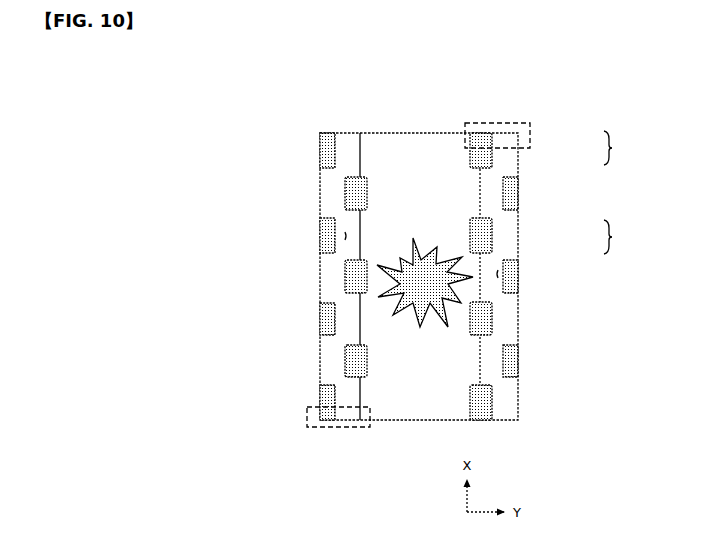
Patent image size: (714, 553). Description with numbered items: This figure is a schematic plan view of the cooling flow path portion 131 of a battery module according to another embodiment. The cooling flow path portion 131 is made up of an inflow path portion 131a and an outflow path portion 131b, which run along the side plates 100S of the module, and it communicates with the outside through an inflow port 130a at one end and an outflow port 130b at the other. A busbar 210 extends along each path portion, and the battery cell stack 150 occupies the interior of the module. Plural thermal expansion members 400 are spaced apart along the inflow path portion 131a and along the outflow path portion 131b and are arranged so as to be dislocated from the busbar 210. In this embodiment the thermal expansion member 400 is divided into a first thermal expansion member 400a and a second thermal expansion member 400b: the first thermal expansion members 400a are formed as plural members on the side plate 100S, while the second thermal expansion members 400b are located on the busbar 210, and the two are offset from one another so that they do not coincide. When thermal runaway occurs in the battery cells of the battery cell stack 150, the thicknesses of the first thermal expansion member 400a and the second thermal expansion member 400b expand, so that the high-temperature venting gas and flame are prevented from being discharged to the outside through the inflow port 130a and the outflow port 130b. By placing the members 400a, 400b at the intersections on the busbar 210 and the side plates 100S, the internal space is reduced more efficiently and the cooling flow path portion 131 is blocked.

The side plate 100S is at (320, 368).
The busbar 210 is at (362, 190).
The first thermal expansion member 400a is at (322, 318).
The second thermal expansion member 400b is at (350, 272).
The thermal expansion member 400 is at (604, 148).
The inflow path portion 131a is at (346, 237).
The outflow path portion 131b is at (500, 275).
The cooling flow path portion 131 is at (604, 237).
The inflow port 130a is at (322, 430).
The outflow port 130b is at (505, 123).
The battery cell stack 150 is at (416, 396).